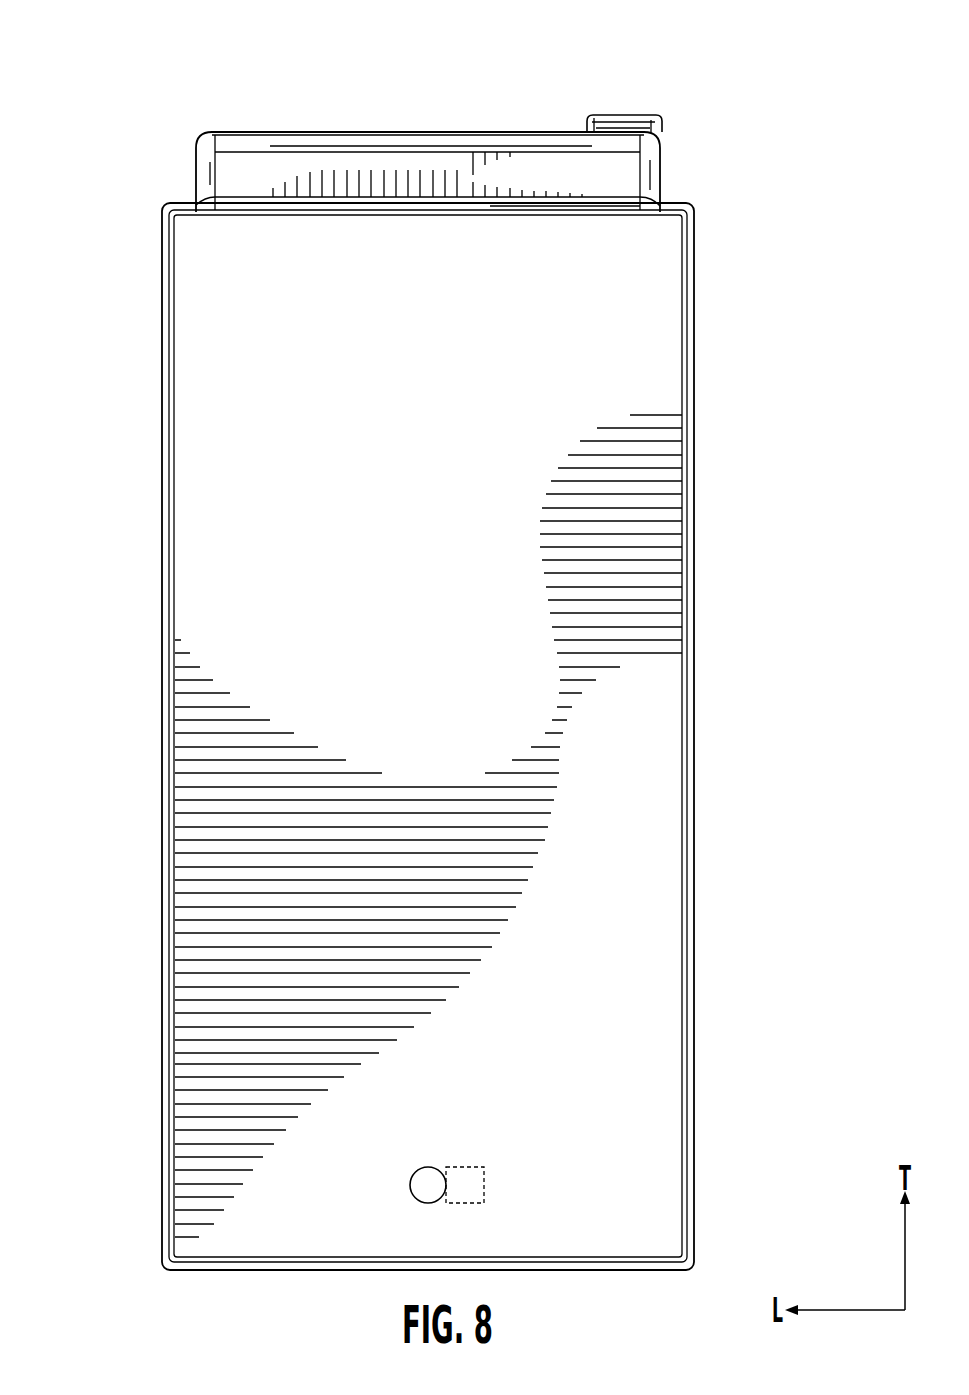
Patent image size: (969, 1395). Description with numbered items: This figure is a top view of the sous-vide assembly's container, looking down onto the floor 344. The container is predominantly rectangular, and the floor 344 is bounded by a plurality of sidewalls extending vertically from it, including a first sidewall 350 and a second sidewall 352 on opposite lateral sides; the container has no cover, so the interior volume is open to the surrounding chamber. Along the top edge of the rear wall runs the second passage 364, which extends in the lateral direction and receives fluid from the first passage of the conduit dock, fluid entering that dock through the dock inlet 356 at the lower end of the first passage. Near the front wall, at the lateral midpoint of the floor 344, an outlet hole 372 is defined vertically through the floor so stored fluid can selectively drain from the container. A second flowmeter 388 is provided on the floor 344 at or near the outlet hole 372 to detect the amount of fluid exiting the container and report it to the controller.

The first sidewall 350 is at (162, 481).
The second sidewall 352 is at (694, 343).
The second passage 364 is at (414, 178).
The dock inlet 356 is at (630, 102).
The floor 344 is at (642, 669).
The outlet hole 372 is at (424, 1160).
The second flowmeter 388 is at (484, 1185).